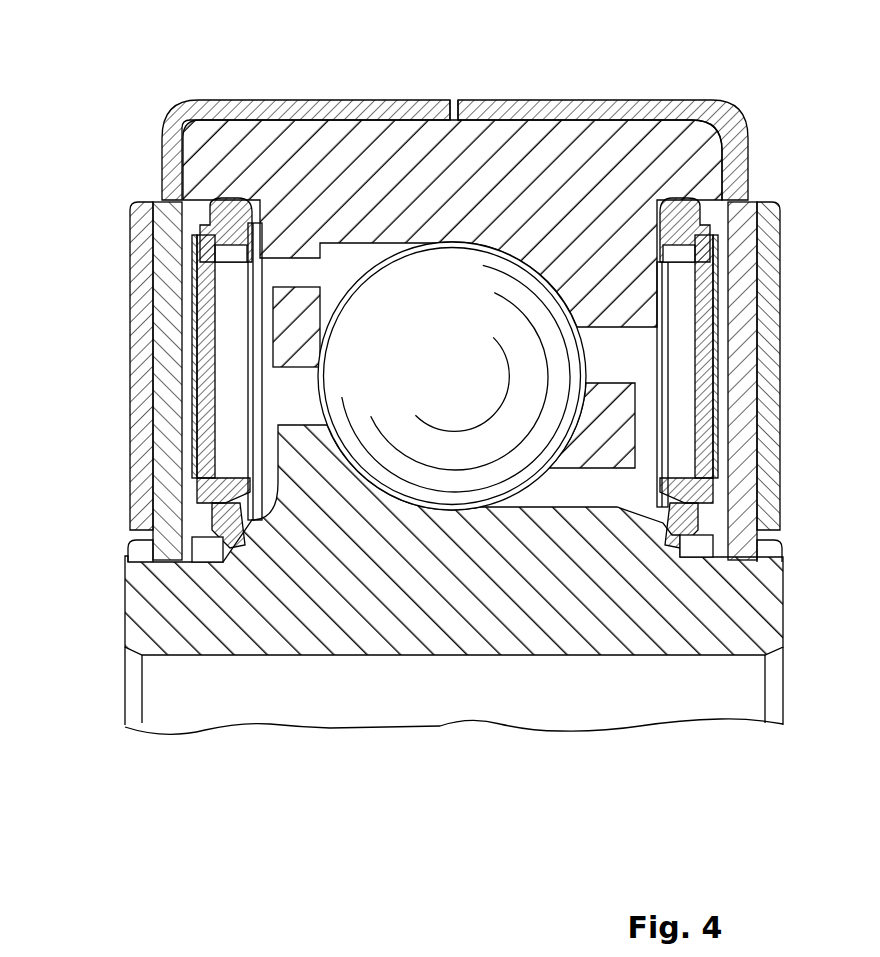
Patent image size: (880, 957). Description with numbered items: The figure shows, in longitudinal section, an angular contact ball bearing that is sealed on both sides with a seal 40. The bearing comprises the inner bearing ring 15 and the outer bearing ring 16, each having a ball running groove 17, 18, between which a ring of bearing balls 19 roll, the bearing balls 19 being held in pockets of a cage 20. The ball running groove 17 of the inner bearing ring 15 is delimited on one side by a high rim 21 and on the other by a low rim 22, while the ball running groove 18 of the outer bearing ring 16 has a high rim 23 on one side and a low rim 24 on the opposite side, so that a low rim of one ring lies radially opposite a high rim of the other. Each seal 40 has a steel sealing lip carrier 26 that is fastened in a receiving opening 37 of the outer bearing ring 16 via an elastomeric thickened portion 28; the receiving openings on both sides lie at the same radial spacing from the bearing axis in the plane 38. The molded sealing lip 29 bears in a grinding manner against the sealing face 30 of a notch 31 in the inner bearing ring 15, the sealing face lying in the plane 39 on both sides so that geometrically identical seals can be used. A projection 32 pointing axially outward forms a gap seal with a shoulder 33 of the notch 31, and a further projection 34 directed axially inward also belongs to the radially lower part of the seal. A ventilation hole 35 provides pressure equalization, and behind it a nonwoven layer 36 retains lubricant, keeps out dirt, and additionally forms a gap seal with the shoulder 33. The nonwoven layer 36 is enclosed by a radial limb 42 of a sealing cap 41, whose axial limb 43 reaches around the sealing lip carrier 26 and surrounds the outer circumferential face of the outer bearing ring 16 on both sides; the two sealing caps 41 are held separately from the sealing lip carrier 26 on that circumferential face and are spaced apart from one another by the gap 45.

The inner bearing ring 15 is at (470, 640).
The outer bearing ring 16 is at (500, 135).
The ball running groove 17 is at (388, 497).
The ball running groove 18 is at (515, 245).
The bearing balls 19 is at (441, 385).
The cage 20 is at (612, 395).
The high rim 21 is at (312, 448).
The low rim 22 is at (540, 517).
The high rim 23 is at (610, 285).
The low rim 24 is at (400, 240).
The sealing lip carrier 26 is at (148, 290).
The elastomeric thickened portion 28 is at (140, 237).
The sealing lip 29 is at (225, 598).
The sealing face 30 is at (455, 669).
The notch 31 is at (210, 580).
The projection 32 is at (175, 527).
The shoulder 33 is at (140, 548).
The projection 34 is at (210, 480).
The ventilation hole 35 is at (193, 452).
The nonwoven layer 36 is at (170, 415).
The receiving opening 37 is at (454, 153).
The plane 38 is at (236, 195).
The plane 39 is at (242, 543).
The seal 40 is at (128, 352).
The sealing cap 41 is at (449, 381).
The radial limb 42 is at (150, 400).
The axial limb 43 is at (297, 100).
The gap 45 is at (455, 100).